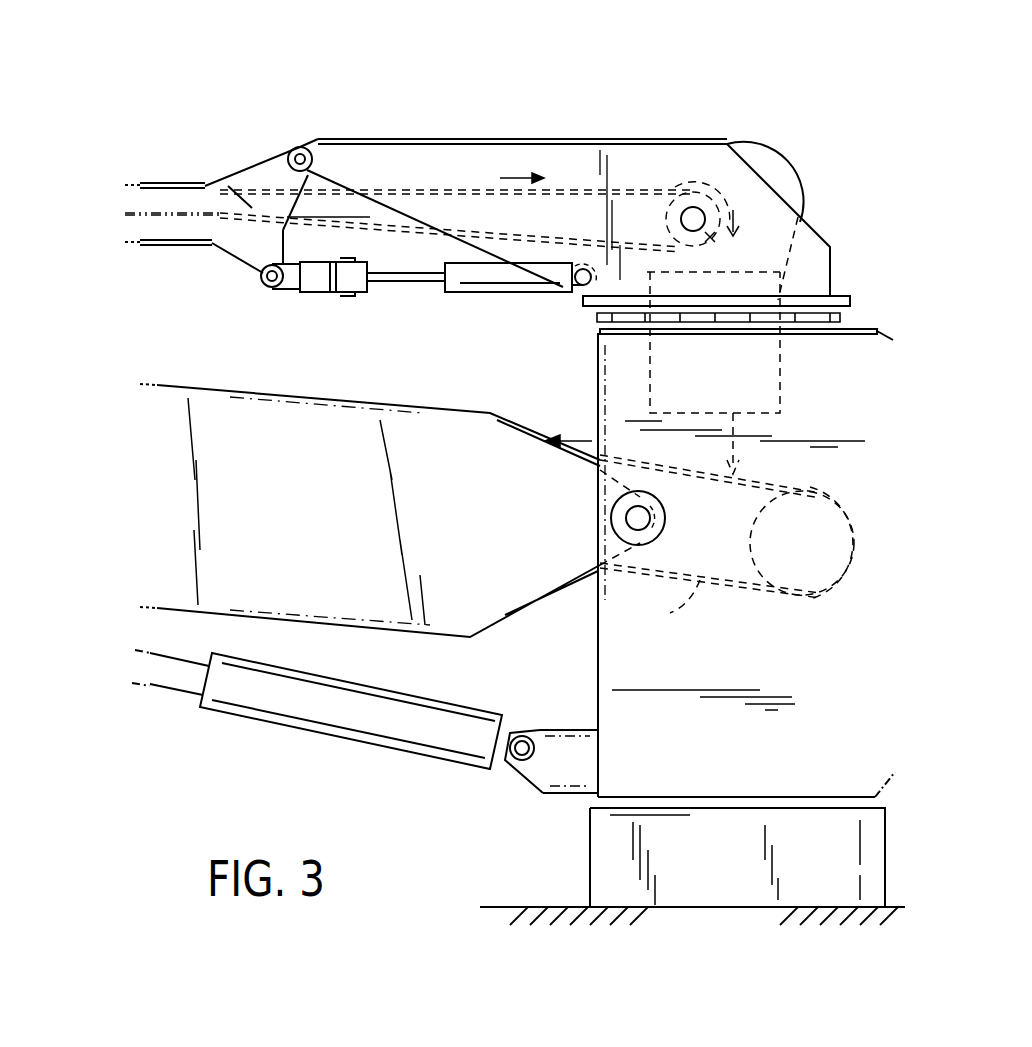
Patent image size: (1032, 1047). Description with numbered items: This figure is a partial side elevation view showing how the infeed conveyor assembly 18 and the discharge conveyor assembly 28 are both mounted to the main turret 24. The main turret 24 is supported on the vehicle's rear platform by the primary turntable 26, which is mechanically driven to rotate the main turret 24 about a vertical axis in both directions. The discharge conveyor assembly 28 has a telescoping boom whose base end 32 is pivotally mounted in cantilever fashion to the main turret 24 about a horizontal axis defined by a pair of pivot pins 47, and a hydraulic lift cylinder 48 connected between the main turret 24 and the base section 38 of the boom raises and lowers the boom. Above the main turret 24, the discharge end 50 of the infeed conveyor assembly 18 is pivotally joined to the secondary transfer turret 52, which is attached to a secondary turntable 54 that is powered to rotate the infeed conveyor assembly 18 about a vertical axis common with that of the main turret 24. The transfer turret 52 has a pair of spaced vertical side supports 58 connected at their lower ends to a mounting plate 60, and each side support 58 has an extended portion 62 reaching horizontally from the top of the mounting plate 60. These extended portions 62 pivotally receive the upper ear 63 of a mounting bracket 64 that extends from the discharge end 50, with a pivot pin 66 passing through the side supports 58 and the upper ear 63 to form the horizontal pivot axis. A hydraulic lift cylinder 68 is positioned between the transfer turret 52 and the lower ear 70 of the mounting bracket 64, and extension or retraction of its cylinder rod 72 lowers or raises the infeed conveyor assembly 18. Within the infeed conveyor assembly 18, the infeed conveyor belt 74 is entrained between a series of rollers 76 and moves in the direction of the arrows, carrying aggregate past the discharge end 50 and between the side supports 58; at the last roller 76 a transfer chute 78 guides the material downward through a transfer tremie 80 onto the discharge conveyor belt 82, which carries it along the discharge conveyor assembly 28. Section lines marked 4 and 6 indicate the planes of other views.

The section line 4- 4 is at (718, 132).
The section line 6- 6 is at (565, 278).
The infeed conveyor assembly 18 is at (127, 218).
The main turret 24 is at (612, 663).
The primary turntable 26 is at (605, 856).
The discharge conveyor assembly 28 is at (143, 625).
The base end 32 is at (537, 575).
The base section 38 is at (378, 605).
The pivot pins 47 is at (659, 525).
The hydraulic lift cylinder 48 is at (315, 718).
The discharge end 50 is at (175, 183).
The secondary transfer turret 52 is at (525, 139).
The secondary turntable 54 is at (578, 335).
The side supports 58 is at (640, 165).
The mounting plate 60 is at (843, 296).
The extended portion 62 is at (385, 160).
The upper ear 63 is at (268, 172).
The mounting bracket 64 is at (248, 205).
The pivot pin 66 is at (298, 147).
The hydraulic lift cylinder 68 is at (462, 293).
The lower ear 70 is at (232, 255).
The cylinder rod 72 is at (405, 292).
The infeed conveyor belt 74 is at (350, 222).
The rollers 76 is at (713, 373).
The transfer chute 78 is at (773, 175).
The transfer tremie 80 is at (770, 352).
The discharge conveyor belt 82 is at (665, 603).